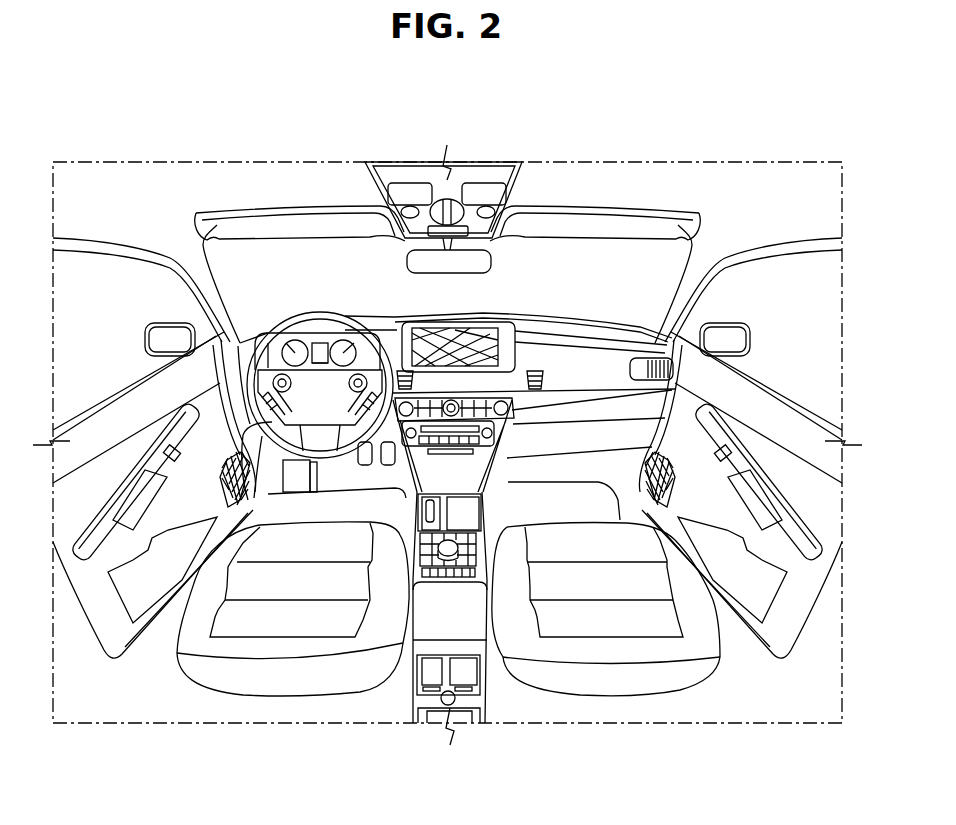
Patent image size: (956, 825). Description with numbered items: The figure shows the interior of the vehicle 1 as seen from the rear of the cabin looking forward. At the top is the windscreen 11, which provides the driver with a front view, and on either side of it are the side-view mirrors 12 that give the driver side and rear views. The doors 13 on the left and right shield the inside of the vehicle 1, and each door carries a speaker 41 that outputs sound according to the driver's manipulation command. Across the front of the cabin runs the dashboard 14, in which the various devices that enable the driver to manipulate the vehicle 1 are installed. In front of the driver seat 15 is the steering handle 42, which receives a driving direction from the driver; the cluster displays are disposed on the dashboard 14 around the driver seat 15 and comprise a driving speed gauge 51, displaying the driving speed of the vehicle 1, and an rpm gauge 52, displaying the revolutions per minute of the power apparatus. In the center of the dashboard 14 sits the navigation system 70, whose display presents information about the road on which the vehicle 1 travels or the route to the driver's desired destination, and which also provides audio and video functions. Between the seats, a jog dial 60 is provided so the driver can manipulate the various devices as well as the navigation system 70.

The vehicle 1 is at (152, 146).
The windscreen 11 is at (272, 252).
The side-view mirror 12 is at (148, 344).
The door 13 is at (77, 507).
The dashboard 14 is at (600, 360).
The driver seat 15 is at (288, 683).
The speaker 41 is at (222, 473).
The steering handle 42 is at (380, 350).
The driving speed gauge 51 is at (290, 350).
The rpm gauge 52 is at (330, 362).
The jog dial 60 is at (453, 534).
The navigation system 70 is at (488, 331).